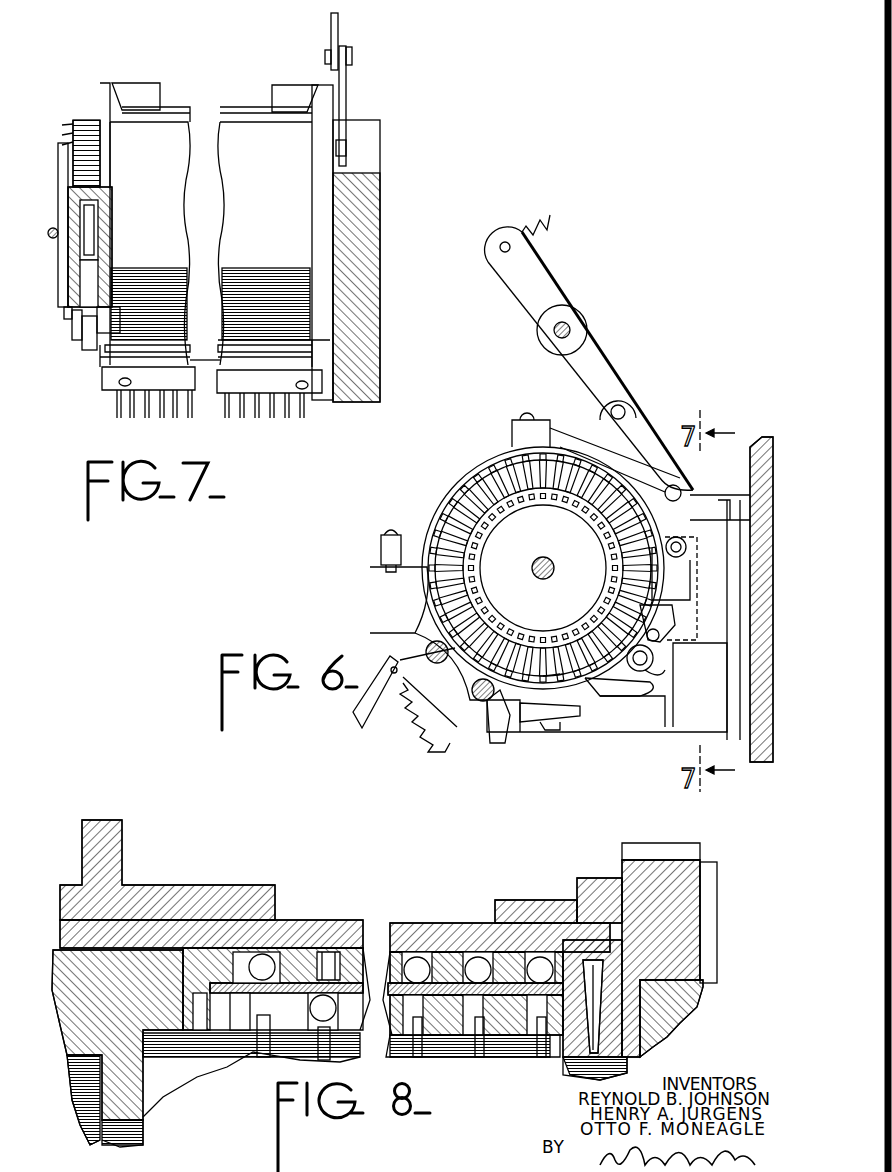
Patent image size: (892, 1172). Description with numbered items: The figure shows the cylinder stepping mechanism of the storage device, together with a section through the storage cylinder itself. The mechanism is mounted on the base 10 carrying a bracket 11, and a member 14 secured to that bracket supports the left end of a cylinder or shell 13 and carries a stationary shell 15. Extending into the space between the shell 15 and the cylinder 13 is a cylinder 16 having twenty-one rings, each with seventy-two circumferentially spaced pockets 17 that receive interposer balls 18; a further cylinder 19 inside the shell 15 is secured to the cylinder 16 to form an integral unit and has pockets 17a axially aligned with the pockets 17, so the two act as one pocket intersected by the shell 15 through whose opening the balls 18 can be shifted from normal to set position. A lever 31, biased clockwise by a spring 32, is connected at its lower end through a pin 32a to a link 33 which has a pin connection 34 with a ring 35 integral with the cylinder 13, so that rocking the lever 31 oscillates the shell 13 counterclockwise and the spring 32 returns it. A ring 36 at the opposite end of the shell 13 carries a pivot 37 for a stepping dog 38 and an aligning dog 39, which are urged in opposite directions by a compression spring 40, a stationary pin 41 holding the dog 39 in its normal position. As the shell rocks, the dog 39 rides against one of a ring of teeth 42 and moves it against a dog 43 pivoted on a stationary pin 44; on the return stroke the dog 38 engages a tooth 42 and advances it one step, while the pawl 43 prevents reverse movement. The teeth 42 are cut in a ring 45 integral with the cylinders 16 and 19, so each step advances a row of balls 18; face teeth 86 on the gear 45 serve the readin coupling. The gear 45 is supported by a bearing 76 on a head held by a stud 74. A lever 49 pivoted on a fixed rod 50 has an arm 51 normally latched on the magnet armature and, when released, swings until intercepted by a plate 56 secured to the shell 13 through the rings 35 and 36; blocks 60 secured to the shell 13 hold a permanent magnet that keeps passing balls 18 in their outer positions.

In FIG. 6, the base 10 is at (750, 468).
In FIG. 7, the bracket 11 is at (381, 265).
In FIG. 6, the bracket 11 is at (612, 735).
In FIG. 7, the cylinder or shell 13 is at (226, 140).
In FIG. 8, the cylinder or shell 13 is at (303, 921).
In FIG. 8, the member 14 is at (145, 1100).
In FIG. 8, the shell or cylinder 15 is at (366, 960).
In FIG. 8, the cylinder 16 is at (445, 950).
In FIG. 8, the pockets 17 is at (325, 935).
In FIG. 8, the pockets 17a is at (470, 1040).
In FIG. 8, the interposer balls 18 is at (475, 950).
In FIG. 8, the cylinder 19 is at (518, 1045).
In FIG. 7, the lever 31 is at (339, 42).
In FIG. 6, the lever 31 is at (552, 287).
In FIG. 6, the spring 32 is at (552, 220).
In FIG. 6, the pin 32a is at (622, 404).
In FIG. 7, the link 33 is at (347, 96).
In FIG. 6, the link 33 is at (646, 440).
In FIG. 7, the pin connection 34 is at (347, 150).
In FIG. 6, the pin connection 34 is at (682, 490).
In FIG. 7, the ring 35 is at (302, 86).
In FIG. 6, the ring 35 is at (660, 472).
In FIG. 8, the ring 35 is at (155, 884).
In FIG. 7, the ring 36 is at (113, 83).
In FIG. 6, the ring 36 is at (602, 458).
In FIG. 8, the ring 36 is at (536, 900).
In FIG. 7, the pivot pin 37 is at (80, 332).
In FIG. 6, the pivot pin 37 is at (654, 658).
In FIG. 7, the stepping dog 38 is at (92, 350).
In FIG. 6, the stepping dog 38 is at (602, 688).
In FIG. 7, the aligning dog 39 is at (72, 322).
In FIG. 6, the aligning dog 39 is at (672, 615).
In FIG. 6, the compression spring 40 is at (660, 675).
In FIG. 7, the stationary pin 41 is at (64, 312).
In FIG. 6, the stationary pin 41 is at (660, 635).
In FIG. 7, the teeth 42 is at (88, 118).
In FIG. 6, the teeth 42 is at (548, 660).
In FIG. 8, the teeth 42 is at (700, 850).
In FIG. 7, the dog or pawl 43 is at (98, 236).
In FIG. 6, the dog or pawl 43 is at (692, 580).
In FIG. 7, the stationary pin 44 is at (112, 213).
In FIG. 6, the stationary pin 44 is at (690, 547).
In FIG. 8, the ring or gear 45 is at (620, 878).
In FIG. 7, the lever 49 is at (145, 420).
In FIG. 6, the lever 49 is at (490, 745).
In FIG. 6, the fixed rod 50 is at (426, 646).
In FIG. 6, the arm 51 is at (358, 720).
In FIG. 7, the plate 56 is at (200, 395).
In FIG. 6, the plate 56 is at (542, 732).
In FIG. 7, the blocks 60 is at (198, 345).
In FIG. 7, the stud 74 is at (48, 230).
In FIG. 6, the stud 74 is at (538, 558).
In FIG. 6, the bearing 76 is at (470, 540).
In FIG. 8, the bearing 76 is at (706, 1000).
In FIG. 7, the teeth 86 is at (62, 125).
In FIG. 6, the teeth 86 is at (478, 490).
In FIG. 8, the teeth 86 is at (717, 945).